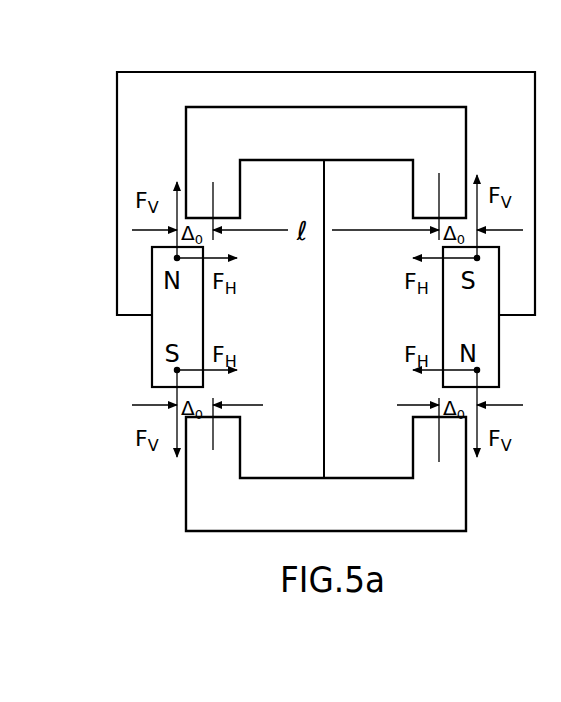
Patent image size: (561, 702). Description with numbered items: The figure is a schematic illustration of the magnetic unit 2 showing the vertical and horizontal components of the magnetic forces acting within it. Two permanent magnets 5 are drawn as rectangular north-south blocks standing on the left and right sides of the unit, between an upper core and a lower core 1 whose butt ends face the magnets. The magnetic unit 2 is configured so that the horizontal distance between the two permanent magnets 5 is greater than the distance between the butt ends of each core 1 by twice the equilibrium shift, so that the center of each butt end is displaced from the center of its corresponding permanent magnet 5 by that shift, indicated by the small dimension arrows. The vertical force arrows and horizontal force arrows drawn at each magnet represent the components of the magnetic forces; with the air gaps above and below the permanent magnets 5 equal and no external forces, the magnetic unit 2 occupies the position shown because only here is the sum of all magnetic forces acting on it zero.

The core 1 is at (207, 158).
The magnetic unit 2 is at (327, 72).
The permanent magnet 5 is at (190, 315).